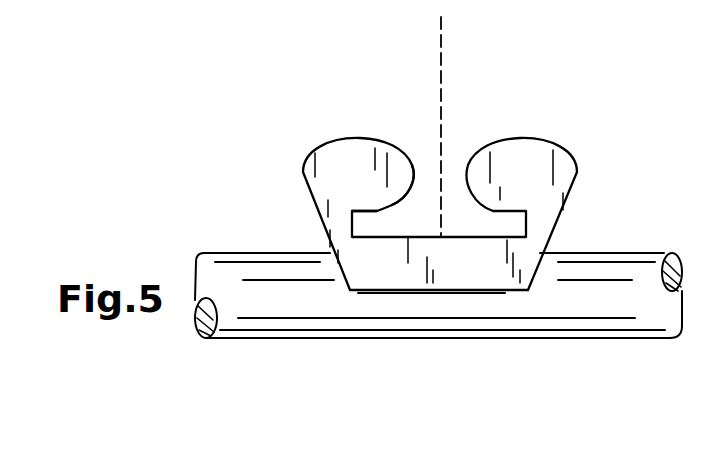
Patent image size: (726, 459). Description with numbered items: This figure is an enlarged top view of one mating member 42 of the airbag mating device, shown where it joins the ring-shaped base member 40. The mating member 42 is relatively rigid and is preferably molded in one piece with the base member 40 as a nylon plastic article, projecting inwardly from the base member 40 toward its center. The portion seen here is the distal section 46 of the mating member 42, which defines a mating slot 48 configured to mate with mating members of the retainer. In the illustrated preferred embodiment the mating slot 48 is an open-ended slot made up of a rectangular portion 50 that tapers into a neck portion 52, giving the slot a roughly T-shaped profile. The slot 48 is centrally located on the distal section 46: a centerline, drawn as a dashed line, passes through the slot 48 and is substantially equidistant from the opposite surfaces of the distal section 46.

The base member 40 is at (277, 295).
The mating member 42 is at (315, 150).
The distal section 46 is at (545, 162).
The mating slot 48 is at (474, 141).
The rectangular portion 50 is at (517, 226).
The neck portion 52 is at (420, 152).